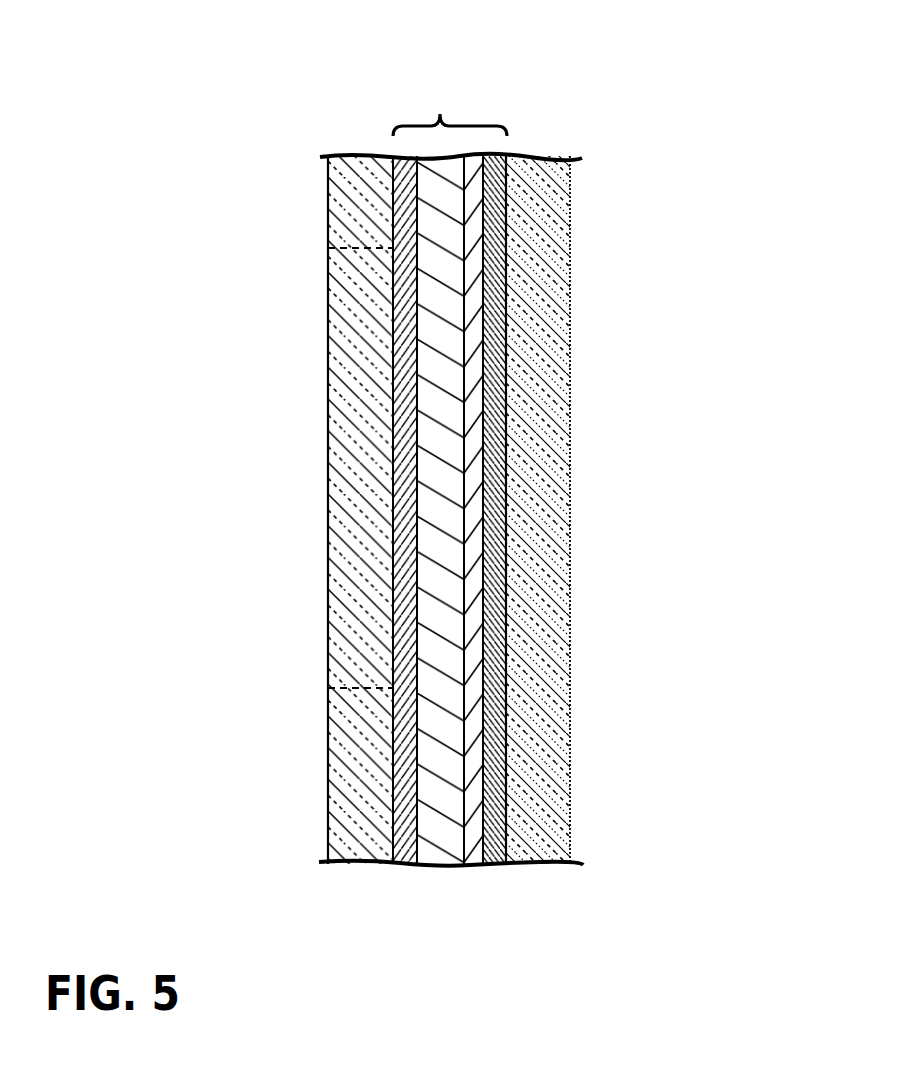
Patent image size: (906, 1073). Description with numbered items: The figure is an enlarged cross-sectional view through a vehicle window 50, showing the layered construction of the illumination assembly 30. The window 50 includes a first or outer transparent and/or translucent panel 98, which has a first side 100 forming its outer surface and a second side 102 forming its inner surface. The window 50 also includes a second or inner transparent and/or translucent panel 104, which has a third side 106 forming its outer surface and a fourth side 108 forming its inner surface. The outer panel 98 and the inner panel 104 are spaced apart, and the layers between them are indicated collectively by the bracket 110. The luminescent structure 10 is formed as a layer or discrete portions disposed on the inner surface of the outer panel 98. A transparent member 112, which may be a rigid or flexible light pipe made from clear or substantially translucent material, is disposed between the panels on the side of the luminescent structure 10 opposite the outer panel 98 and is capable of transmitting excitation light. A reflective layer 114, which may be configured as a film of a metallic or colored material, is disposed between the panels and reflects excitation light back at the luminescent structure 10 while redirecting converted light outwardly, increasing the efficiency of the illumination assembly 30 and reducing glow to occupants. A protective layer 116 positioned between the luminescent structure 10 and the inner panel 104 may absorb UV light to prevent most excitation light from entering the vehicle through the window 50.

The luminescent structure 10 is at (403, 806).
The illumination assembly 30 is at (377, 110).
The window 50 is at (327, 193).
The outer panel 98 is at (327, 236).
The first side 100 is at (328, 746).
The second side 102 is at (396, 757).
The inner panel 104 is at (572, 305).
The third side 106 is at (572, 477).
The fourth side 108 is at (505, 448).
The core laminate 110 is at (450, 110).
The transparent member 112 is at (448, 652).
The reflective layer 114 is at (472, 612).
The protective layer 116 is at (493, 523).